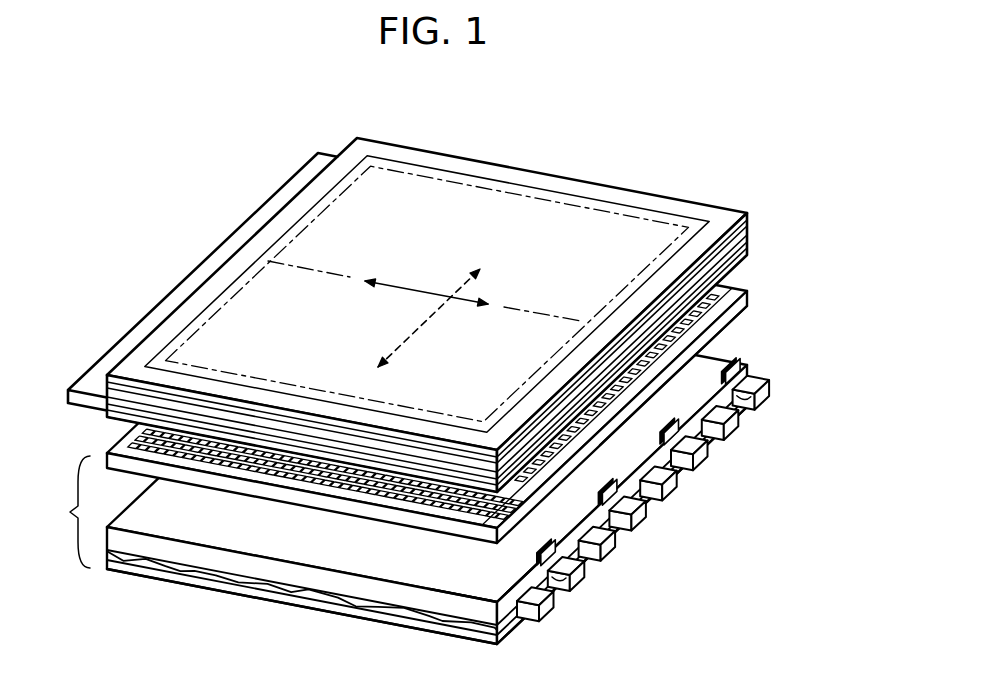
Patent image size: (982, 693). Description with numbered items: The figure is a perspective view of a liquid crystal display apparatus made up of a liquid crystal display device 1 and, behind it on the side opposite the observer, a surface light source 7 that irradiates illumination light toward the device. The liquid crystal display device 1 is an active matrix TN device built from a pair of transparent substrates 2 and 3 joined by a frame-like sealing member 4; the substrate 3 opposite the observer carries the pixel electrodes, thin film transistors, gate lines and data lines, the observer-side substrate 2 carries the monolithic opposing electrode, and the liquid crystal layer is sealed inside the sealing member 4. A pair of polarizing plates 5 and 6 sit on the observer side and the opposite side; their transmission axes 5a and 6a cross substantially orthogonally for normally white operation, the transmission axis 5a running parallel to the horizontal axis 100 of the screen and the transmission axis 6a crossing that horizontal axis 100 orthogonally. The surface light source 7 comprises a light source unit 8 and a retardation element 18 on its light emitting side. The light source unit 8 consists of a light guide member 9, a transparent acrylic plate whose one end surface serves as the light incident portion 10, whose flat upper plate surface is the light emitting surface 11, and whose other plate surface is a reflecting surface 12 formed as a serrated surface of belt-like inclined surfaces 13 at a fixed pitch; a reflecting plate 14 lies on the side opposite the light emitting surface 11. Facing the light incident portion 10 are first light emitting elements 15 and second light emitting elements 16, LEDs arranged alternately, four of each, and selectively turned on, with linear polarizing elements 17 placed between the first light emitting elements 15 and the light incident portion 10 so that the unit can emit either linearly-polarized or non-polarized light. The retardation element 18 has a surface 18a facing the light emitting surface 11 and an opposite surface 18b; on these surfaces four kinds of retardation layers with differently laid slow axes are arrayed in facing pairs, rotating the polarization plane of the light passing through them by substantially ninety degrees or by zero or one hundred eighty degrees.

The liquid crystal display device 1 is at (452, 307).
The transparent substrate 2 is at (749, 216).
The transparent substrate 3 is at (750, 242).
The sealing member 4 is at (744, 258).
The polarizing plate 5 is at (130, 360).
The transmission axis 5a is at (410, 287).
The polarizing plate 6 is at (108, 420).
The transmission axis 6a is at (430, 331).
The surface light source 7 is at (71, 512).
The light source unit 8 is at (399, 485).
The light guide member 9 is at (447, 618).
The light incident portion 10 is at (505, 606).
The light emitting surface 11 is at (262, 538).
The reflecting surface 12 is at (323, 593).
The inclined surfaces 13 is at (390, 607).
The reflecting plate 14 is at (160, 578).
The first light emitting elements 15 is at (584, 572).
The second light emitting elements 16 is at (540, 608).
The linear polarizing elements 17 is at (572, 590).
The retardation element 18 is at (427, 387).
The surface facing the light source unit 18a is at (654, 398).
The opposite surface 18b is at (688, 365).
The horizontal axis 100 is at (528, 310).